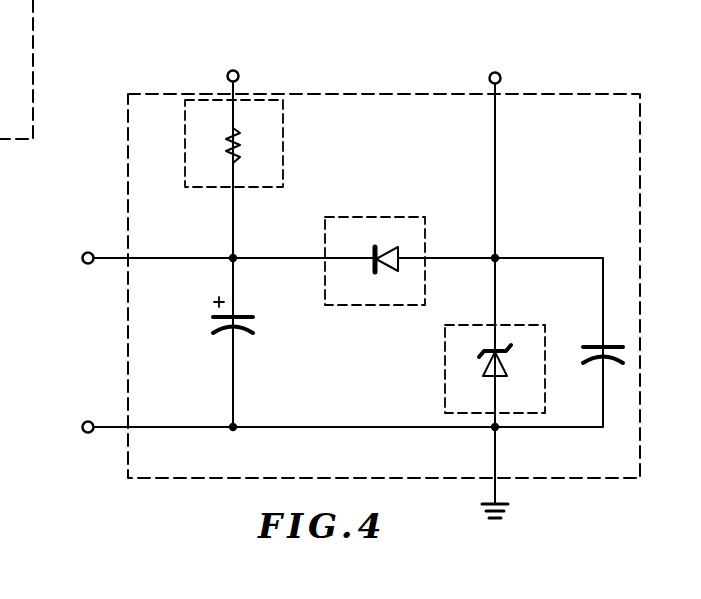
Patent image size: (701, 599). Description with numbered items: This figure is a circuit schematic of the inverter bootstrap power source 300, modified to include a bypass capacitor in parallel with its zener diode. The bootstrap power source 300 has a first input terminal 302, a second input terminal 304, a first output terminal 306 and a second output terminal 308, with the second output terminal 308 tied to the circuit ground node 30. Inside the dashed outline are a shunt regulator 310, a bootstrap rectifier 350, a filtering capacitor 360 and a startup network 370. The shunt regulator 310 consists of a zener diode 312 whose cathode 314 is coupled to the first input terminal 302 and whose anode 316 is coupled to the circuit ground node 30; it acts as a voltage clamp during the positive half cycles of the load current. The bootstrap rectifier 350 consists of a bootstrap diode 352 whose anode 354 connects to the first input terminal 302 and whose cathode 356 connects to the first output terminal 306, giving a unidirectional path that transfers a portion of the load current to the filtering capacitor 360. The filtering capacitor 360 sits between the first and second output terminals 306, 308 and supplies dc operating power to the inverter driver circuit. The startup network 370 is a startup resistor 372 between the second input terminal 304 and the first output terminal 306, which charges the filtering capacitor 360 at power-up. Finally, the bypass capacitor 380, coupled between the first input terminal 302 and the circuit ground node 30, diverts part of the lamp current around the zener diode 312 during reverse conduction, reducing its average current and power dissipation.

The bootstrap power source 300 is at (370, 94).
The first input terminal 302 is at (502, 76).
The second input terminal 304 is at (241, 72).
The first output terminal 306 is at (82, 254).
The second output terminal 308 is at (83, 423).
The shunt regulator 310 is at (518, 325).
The zener diode 312 is at (505, 370).
The cathode 314 is at (493, 328).
The anode 316 is at (497, 413).
The circuit ground node 30 is at (492, 484).
The bootstrap rectifier 350 is at (381, 217).
The bootstrap diode 352 is at (385, 249).
The anode 354 is at (413, 259).
The cathode 356 is at (352, 264).
The filtering capacitor 360 is at (238, 318).
The startup network 370 is at (284, 114).
The startup resistor 372 is at (227, 150).
The bypass capacitor 380 is at (598, 366).